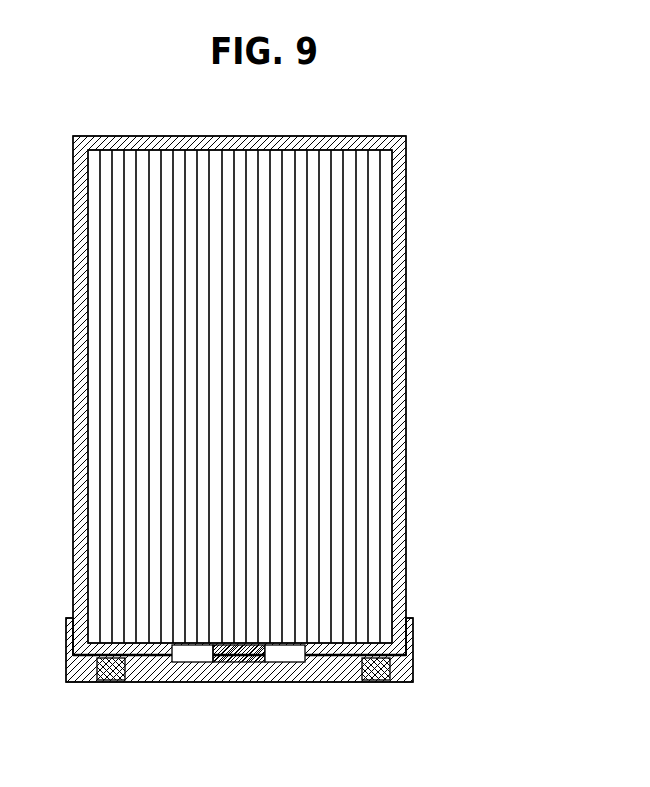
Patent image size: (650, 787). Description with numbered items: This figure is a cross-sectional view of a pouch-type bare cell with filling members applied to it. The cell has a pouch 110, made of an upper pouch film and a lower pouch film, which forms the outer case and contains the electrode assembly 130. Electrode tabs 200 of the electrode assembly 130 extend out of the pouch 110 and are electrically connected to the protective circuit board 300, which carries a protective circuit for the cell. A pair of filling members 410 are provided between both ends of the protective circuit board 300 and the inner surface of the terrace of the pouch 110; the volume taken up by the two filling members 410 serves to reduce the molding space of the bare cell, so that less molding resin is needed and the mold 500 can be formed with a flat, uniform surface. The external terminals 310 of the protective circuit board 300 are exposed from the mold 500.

The pouch 110 is at (406, 258).
The electrode assembly 130 is at (350, 382).
The electrode tabs 200 is at (290, 652).
The protective circuit board 300 is at (215, 663).
The external terminals 310 is at (163, 663).
The filling members 410 is at (118, 672).
The mold 500 is at (414, 667).